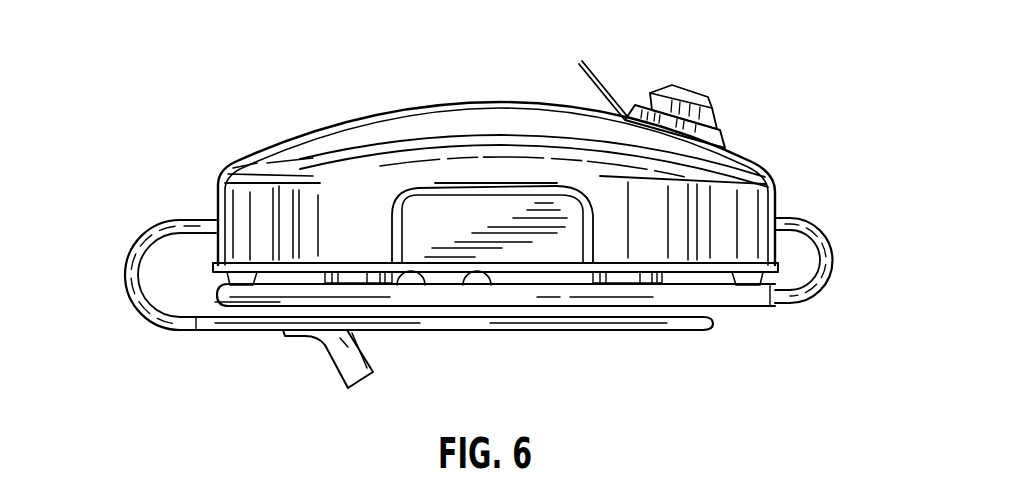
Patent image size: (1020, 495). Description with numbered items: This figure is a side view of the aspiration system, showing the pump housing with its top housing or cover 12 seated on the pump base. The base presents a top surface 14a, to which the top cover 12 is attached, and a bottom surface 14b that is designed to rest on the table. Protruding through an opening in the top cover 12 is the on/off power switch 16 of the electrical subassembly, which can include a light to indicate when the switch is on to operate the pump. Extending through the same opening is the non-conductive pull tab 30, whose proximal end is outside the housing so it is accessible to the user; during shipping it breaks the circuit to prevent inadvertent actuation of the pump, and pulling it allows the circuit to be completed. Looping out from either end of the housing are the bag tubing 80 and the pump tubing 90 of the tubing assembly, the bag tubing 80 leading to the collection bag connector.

The top cover 12 is at (422, 177).
The top surface 14a is at (727, 282).
The bottom surface 14b is at (719, 312).
The on/off power switch 16 is at (690, 88).
The pull tab 30 is at (587, 70).
The bag tubing 80 is at (818, 245).
The pump tubing 90 is at (130, 297).